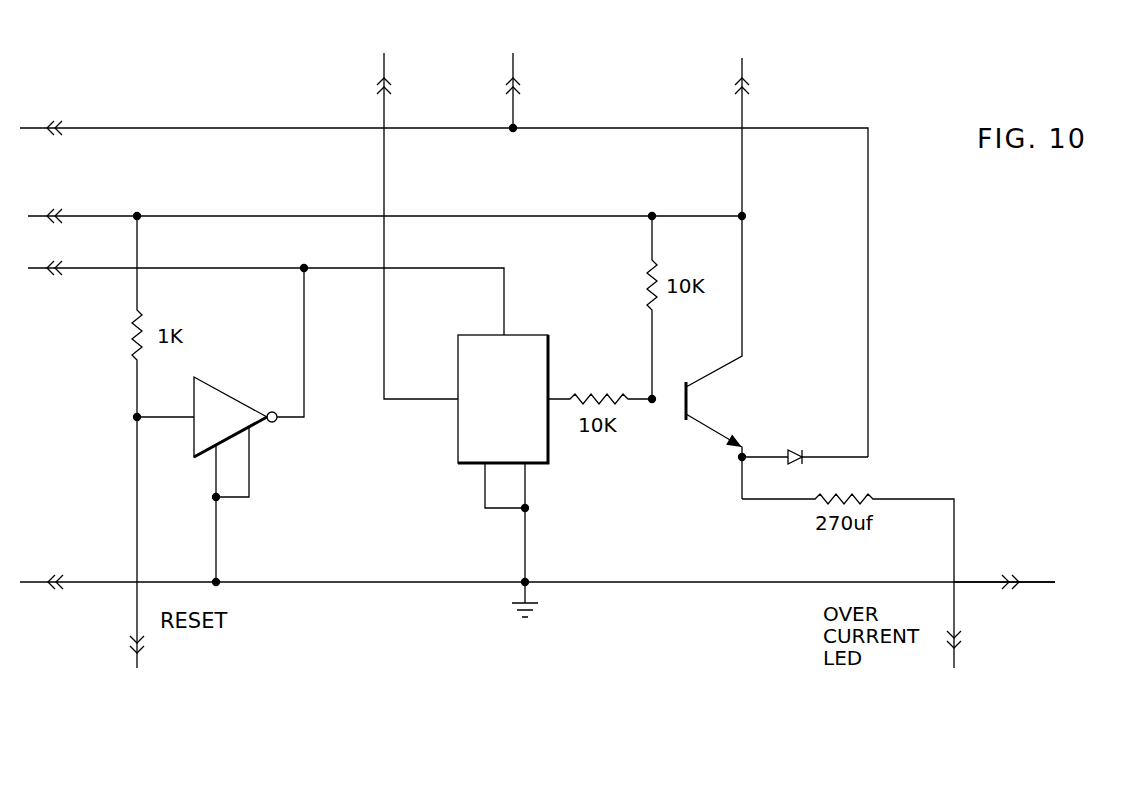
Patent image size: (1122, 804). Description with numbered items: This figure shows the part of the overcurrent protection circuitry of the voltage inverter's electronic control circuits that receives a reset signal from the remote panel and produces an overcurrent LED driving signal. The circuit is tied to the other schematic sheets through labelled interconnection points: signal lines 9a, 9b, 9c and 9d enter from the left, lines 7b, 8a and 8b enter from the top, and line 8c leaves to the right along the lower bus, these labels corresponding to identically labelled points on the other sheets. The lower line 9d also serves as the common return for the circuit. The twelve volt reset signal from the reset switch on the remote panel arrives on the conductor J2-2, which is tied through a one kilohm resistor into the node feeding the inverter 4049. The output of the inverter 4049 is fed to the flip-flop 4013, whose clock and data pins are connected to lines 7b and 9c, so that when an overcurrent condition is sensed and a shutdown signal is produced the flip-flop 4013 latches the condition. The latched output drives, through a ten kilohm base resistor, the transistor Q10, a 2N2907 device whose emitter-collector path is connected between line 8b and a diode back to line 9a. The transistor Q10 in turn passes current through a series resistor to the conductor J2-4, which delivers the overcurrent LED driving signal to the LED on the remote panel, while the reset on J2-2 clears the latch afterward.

The interconnection point 9a is at (34, 128).
The signal line 9b is at (40, 216).
The signal line 9c is at (39, 268).
The ground line 9d is at (36, 582).
The signal line 7b is at (386, 64).
The signal line 8a is at (515, 64).
The signal line 8b is at (744, 66).
The signal line 8c is at (1040, 582).
The conductor input reset J2-2 is at (139, 662).
The over current LED connector J2-4 is at (952, 657).
The 4049 inverter 4049 is at (232, 395).
The 4013 flip-flop 4013 is at (527, 419).
The 2N2907 transistor Q10 is at (750, 357).